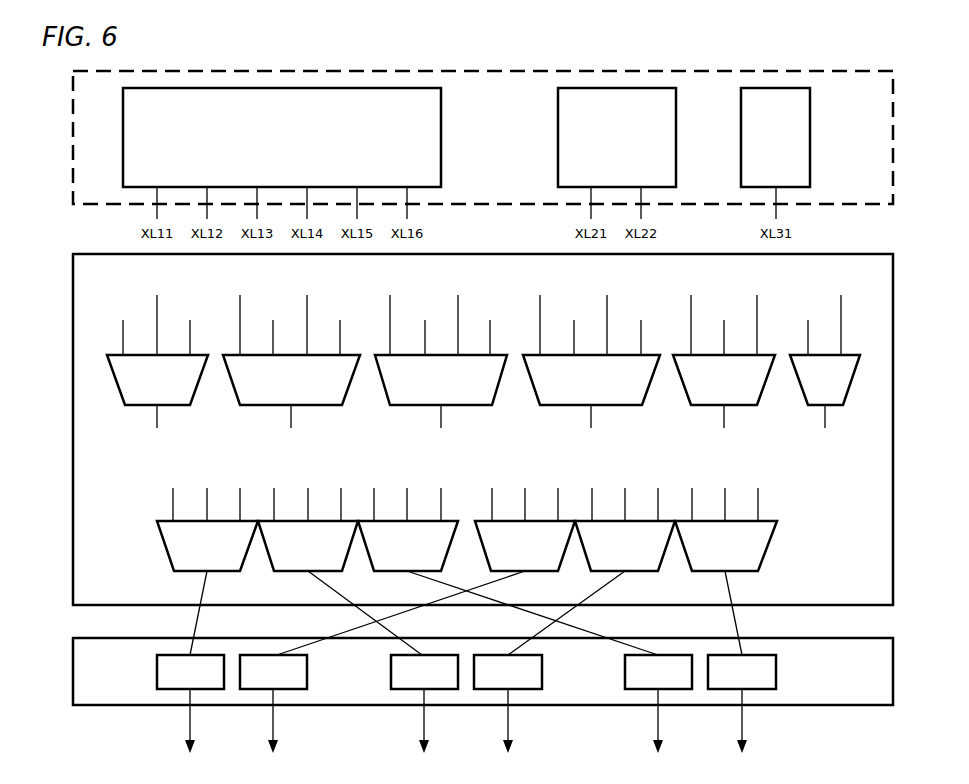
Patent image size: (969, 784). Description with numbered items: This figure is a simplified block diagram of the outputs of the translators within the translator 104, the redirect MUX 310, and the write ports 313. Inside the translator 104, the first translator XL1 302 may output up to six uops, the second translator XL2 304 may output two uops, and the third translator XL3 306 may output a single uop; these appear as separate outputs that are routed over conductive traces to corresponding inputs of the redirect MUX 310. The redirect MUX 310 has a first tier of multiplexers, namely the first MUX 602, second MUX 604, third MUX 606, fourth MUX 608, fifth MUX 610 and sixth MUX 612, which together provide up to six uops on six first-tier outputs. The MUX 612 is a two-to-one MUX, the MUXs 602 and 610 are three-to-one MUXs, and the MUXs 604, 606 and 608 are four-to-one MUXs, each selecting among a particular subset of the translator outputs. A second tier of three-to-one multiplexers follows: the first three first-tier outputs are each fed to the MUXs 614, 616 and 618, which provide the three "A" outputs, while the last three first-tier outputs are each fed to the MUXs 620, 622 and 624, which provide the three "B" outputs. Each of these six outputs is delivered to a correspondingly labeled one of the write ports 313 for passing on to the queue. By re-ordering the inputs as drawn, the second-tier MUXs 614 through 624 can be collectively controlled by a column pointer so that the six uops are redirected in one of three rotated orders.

The translator 104 is at (338, 71).
The first translator XL1 302 is at (269, 156).
The second translator XL2 304 is at (604, 156).
The third translator XL3 306 is at (763, 156).
The redirect MUX 310 is at (822, 523).
The write ports 313 is at (815, 706).
The first MUX 602 is at (144, 388).
The second MUX 604 is at (278, 388).
The third MUX 606 is at (428, 388).
The fourth MUX 608 is at (578, 388).
The fifth MUX 610 is at (711, 388).
The sixth MUX 612 is at (812, 388).
The MUX 614 is at (194, 554).
The MUX 616 is at (295, 554).
The MUX 618 is at (394, 554).
The MUX 620 is at (512, 554).
The MUX 622 is at (612, 554).
The MUX 624 is at (712, 554).